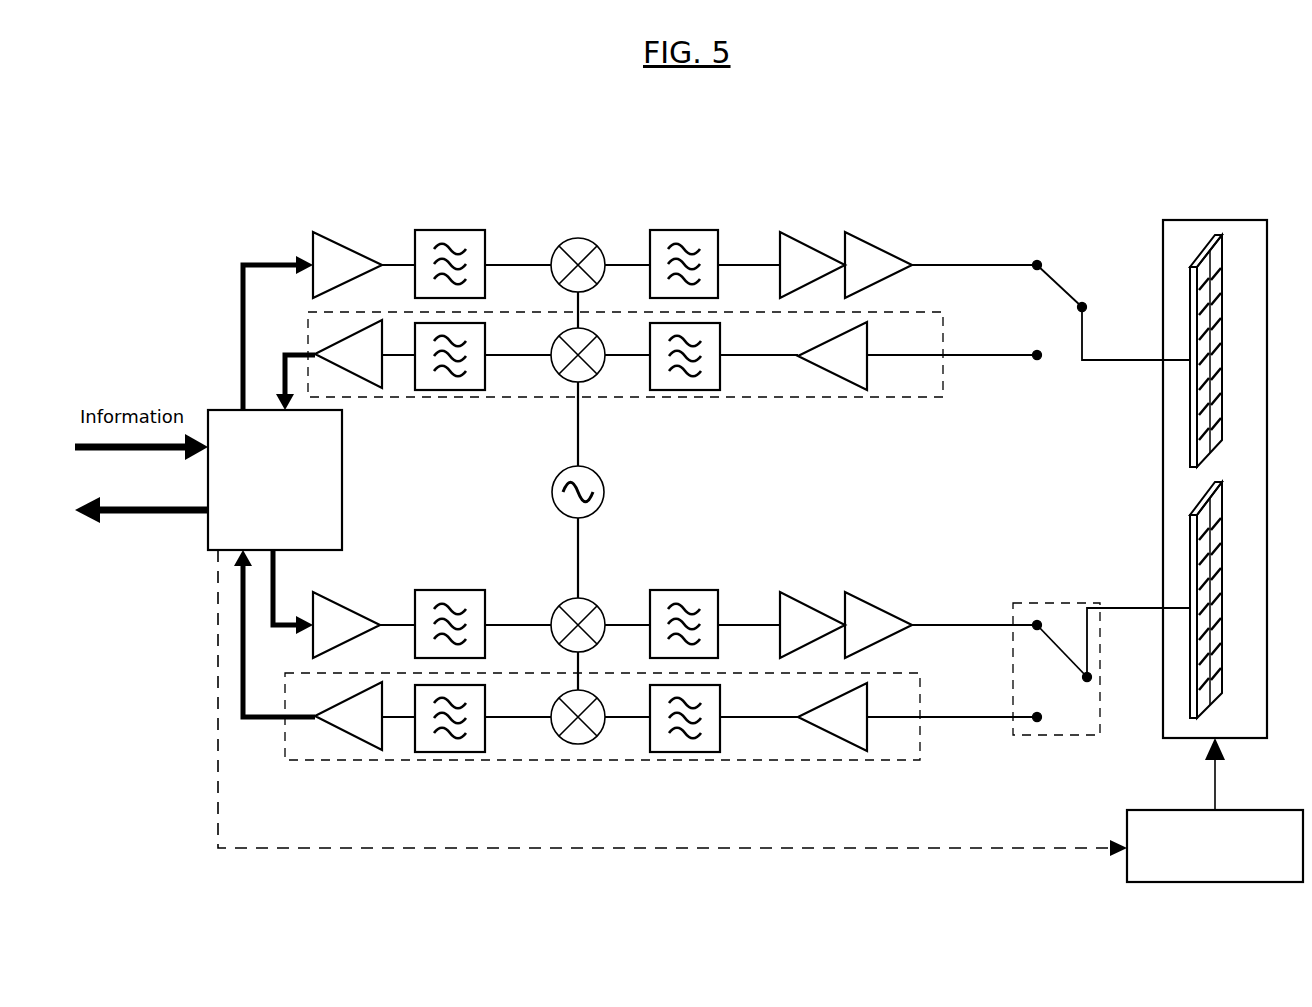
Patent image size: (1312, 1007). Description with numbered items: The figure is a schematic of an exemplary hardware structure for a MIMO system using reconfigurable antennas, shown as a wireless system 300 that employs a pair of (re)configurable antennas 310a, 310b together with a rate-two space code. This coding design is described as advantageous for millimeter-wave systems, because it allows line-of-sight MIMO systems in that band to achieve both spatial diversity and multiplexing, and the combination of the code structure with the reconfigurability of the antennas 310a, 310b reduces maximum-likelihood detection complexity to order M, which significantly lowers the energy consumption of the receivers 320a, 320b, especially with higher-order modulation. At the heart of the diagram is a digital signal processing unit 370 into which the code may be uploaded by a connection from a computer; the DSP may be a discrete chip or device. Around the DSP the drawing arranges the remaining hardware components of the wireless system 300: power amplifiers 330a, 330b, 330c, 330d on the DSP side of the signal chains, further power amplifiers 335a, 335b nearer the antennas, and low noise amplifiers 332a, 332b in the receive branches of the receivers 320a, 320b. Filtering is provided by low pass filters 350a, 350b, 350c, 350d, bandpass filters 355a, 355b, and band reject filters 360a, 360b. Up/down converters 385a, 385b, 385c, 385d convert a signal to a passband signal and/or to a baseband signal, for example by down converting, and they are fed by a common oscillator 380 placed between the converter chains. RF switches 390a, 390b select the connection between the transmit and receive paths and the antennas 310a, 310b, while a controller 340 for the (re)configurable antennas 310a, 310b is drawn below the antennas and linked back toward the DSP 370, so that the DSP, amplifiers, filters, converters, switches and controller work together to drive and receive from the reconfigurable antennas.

The wireless system 300 is at (898, 132).
The reconfigurable antenna 310a is at (1205, 240).
The reconfigurable antenna 310b is at (1190, 515).
The receiver 320a is at (925, 735).
The receiver 320b is at (944, 362).
The power amplifier 330a is at (310, 248).
The power amplifier 330b is at (369, 372).
The power amplifier 330c is at (342, 594).
The power amplifier 330d is at (354, 744).
The low noise amplifier 332a is at (870, 375).
The low noise amplifier 332b is at (835, 728).
The power amplifier 335a is at (852, 236).
The power amplifier 335b is at (840, 594).
The controller 340 is at (1165, 810).
The low pass filter 350a is at (473, 236).
The low pass filter 350b is at (445, 392).
The low pass filter 350c is at (467, 590).
The low pass filter 350d is at (463, 752).
The bandpass filter 355a is at (696, 386).
The bandpass filter 355b is at (705, 754).
The band reject filter 360a is at (690, 236).
The band reject filter 360b is at (678, 590).
The digital signal processing unit 370 is at (275, 480).
The oscillator 380 is at (523, 497).
The up/down converter 385a is at (578, 238).
The up/down converter 385b is at (565, 385).
The up/down converter 385c is at (590, 598).
The up/down converter 385d is at (577, 748).
The RF switch 390a is at (1112, 288).
The RF switch 390b is at (1050, 603).